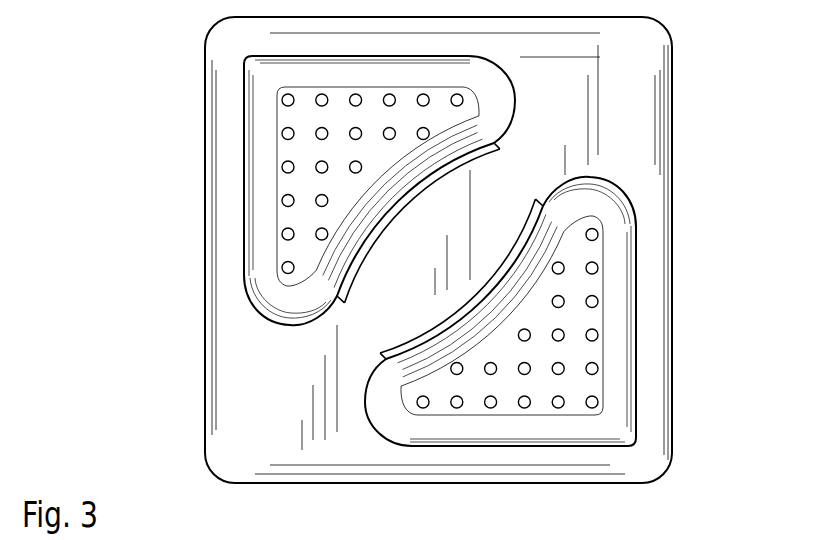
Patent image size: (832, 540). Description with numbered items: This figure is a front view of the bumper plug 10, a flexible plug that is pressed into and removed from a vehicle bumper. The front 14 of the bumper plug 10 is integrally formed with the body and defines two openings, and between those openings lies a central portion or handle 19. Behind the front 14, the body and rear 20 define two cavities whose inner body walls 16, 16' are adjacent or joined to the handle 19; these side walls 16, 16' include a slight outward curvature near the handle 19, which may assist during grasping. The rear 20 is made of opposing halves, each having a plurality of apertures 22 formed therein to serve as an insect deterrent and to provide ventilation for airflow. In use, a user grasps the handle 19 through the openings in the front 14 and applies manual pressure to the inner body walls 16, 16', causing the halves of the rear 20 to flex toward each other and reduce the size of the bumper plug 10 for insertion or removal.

The bumper plug 10 is at (484, 248).
The front 14 is at (647, 45).
The inner body wall 16 is at (427, 218).
The inner body wall 16' is at (447, 283).
The handle 19 is at (400, 256).
The rear 20 is at (575, 315).
The apertures 22 is at (287, 161).